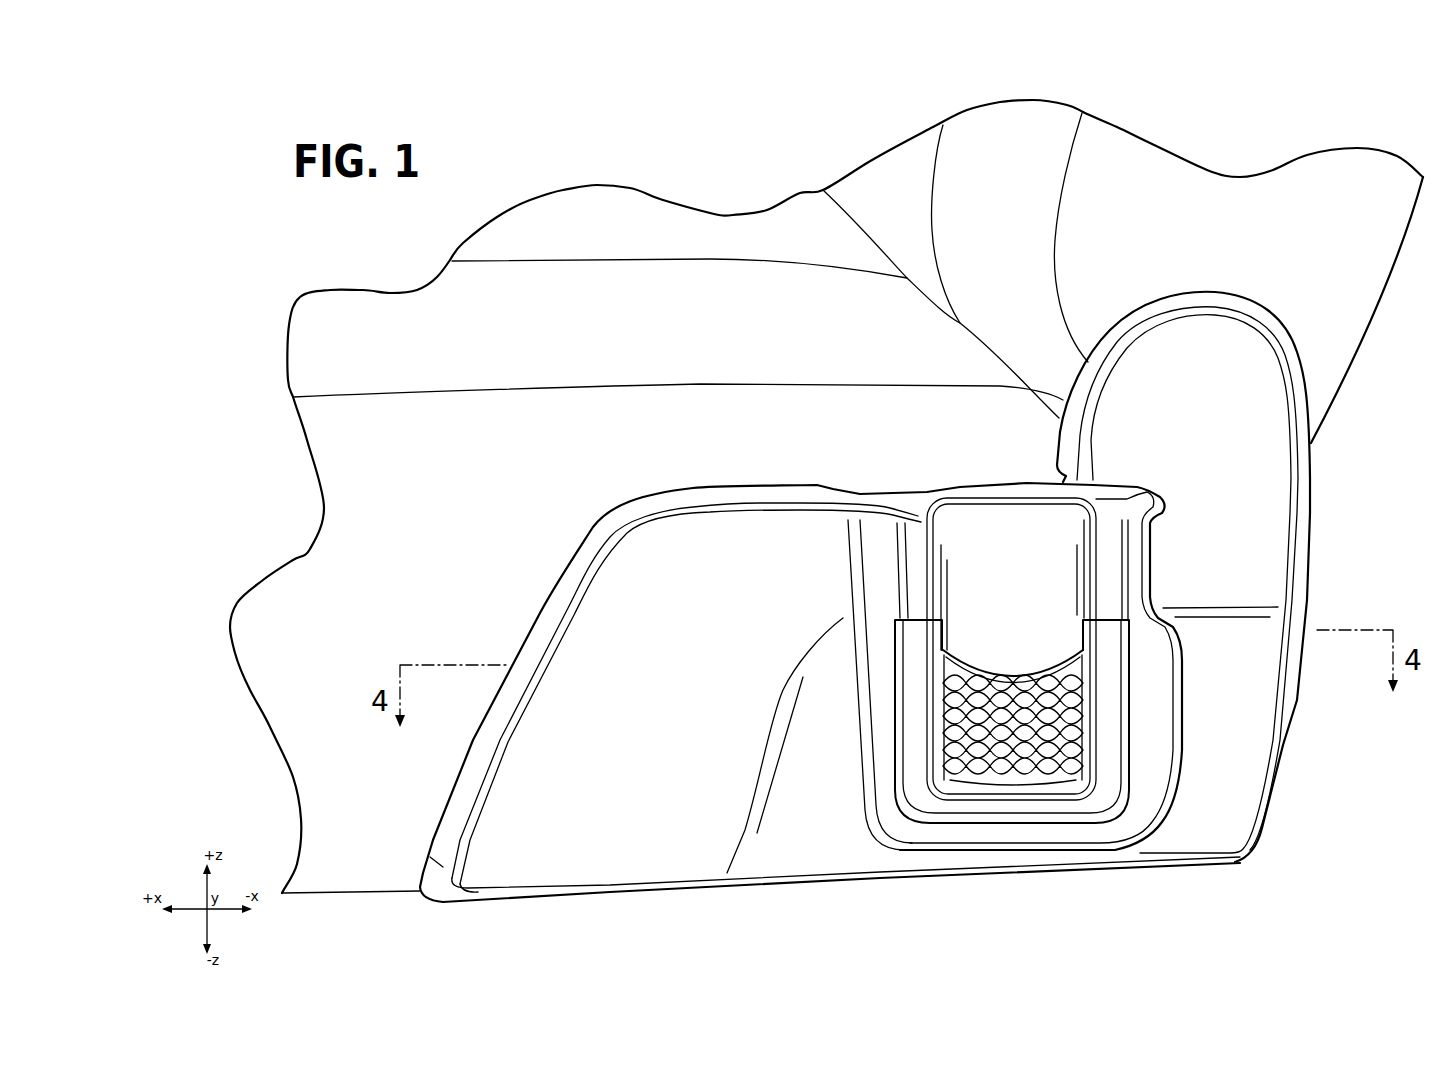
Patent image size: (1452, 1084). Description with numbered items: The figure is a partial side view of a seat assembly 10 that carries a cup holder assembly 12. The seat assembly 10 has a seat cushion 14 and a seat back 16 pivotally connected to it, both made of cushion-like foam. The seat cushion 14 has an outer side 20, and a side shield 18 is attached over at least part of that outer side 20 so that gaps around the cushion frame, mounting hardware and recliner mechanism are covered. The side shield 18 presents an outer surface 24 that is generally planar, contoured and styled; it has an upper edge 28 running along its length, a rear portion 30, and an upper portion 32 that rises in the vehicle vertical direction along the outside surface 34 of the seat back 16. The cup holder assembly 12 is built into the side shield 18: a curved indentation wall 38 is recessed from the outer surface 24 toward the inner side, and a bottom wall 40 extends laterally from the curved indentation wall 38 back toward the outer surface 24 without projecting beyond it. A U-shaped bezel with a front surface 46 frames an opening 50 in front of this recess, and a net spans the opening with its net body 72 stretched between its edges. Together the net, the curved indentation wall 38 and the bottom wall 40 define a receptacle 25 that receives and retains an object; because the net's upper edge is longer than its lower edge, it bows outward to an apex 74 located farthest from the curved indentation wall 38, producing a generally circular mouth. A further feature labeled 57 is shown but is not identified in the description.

The seat assembly 10 is at (1293, 97).
The cup holder assembly 12 is at (1197, 737).
The seat cushion 14 is at (333, 434).
The seat back 16 is at (1337, 338).
The side shield 18 is at (571, 872).
The outer side 20 is at (393, 532).
The outer surface 24 is at (661, 709).
The receptacle 25 is at (1011, 625).
The upper edge 28 is at (767, 493).
The rear portion 30 is at (1237, 800).
The upper portion 32 is at (1273, 513).
The outside surface 34 is at (1170, 227).
The curved indentation wall 38 is at (975, 541).
The bottom wall 40 is at (992, 773).
The front surface 46 is at (922, 730).
The opening 50 is at (1063, 638).
The edge of bin 57 is at (1082, 627).
The net body 72 is at (1080, 733).
The apex 74 is at (1017, 672).